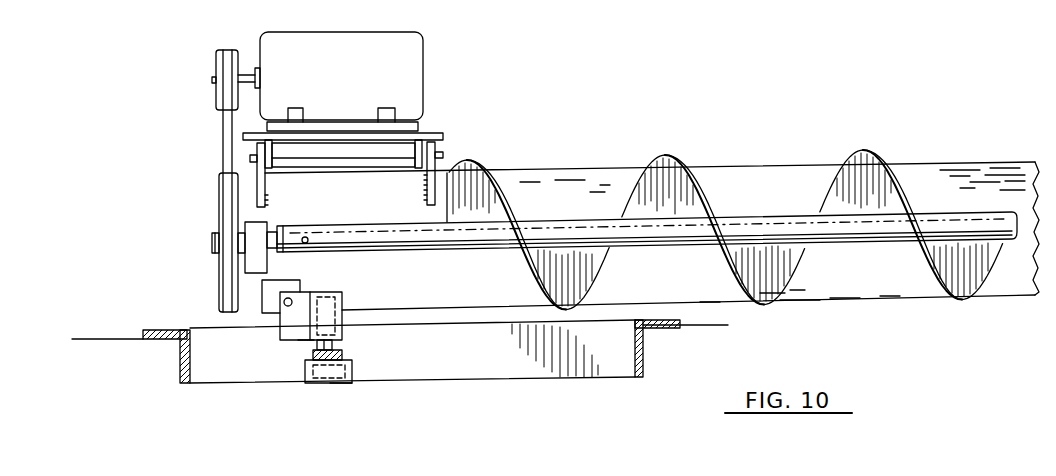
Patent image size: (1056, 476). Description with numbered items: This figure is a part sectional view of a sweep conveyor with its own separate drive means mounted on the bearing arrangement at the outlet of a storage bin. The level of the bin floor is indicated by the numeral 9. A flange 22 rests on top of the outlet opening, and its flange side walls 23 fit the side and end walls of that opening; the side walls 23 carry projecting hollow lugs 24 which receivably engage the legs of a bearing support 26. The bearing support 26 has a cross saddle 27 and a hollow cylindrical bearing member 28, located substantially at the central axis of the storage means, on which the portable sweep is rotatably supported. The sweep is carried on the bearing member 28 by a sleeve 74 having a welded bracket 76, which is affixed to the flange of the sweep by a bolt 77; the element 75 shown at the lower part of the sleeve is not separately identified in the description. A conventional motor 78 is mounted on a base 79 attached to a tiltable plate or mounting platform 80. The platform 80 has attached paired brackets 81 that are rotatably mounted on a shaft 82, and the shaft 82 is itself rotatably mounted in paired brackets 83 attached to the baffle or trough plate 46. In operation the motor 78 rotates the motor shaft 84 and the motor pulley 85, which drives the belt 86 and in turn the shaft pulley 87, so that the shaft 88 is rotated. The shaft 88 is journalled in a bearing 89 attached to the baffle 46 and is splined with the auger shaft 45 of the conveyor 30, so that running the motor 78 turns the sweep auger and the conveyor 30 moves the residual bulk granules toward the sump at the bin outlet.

The bin floor level 9 is at (93, 338).
The flange 22 is at (162, 330).
The flange side walls 23 is at (178, 357).
The projecting hollow lugs 24 is at (334, 380).
The bearing support 26 is at (298, 378).
The cross saddle 27 is at (345, 358).
The hollow cylindrical bearing member 28 is at (342, 348).
The conveyor 30 is at (879, 149).
The auger shaft 45 is at (446, 256).
The baffle or trough plate 46 is at (570, 185).
The sleeve 74 is at (344, 306).
The bearing 75 is at (304, 339).
The welded bracket 76 is at (289, 289).
The bolt 77 is at (284, 316).
The motor 78 is at (396, 50).
The base 79 is at (296, 118).
The tiltable plate or mounting platform 80 is at (441, 128).
The paired brackets 81 is at (414, 165).
The shaft 82 is at (447, 155).
The paired brackets 83 is at (267, 182).
The motor shaft 84 is at (212, 83).
The motor pulley 85 is at (214, 66).
The belt 86 is at (221, 130).
The shaft pulley 87 is at (217, 200).
The shaft 88 is at (212, 243).
The bearing 89 is at (265, 221).